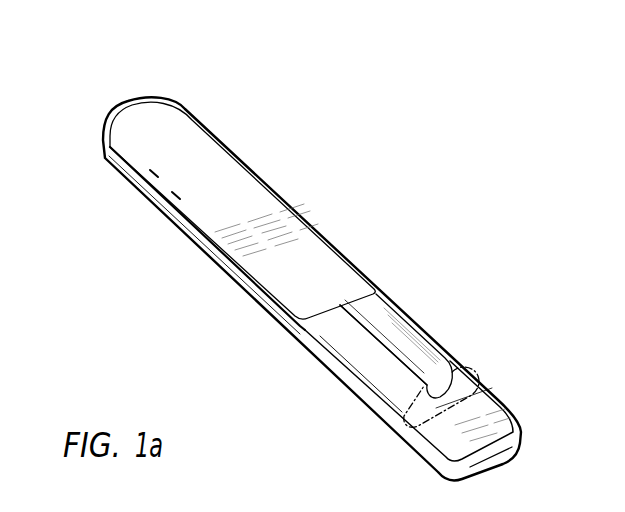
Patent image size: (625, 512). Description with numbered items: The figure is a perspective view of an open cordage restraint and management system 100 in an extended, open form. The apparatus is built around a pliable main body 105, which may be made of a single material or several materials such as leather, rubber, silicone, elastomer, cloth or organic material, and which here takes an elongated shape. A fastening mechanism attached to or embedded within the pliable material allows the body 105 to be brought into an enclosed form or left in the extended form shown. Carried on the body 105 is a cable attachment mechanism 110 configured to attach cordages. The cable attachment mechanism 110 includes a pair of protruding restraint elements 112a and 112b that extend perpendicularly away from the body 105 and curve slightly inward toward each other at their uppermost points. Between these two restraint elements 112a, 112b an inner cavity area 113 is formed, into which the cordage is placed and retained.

The open cordage restraint and management system 100 is at (149, 52).
The main body 105 is at (218, 162).
The cable attachment mechanism 110 is at (448, 318).
The restraint element 112a is at (388, 372).
The restraint element 112b is at (452, 352).
The inner cavity area 113 is at (376, 302).